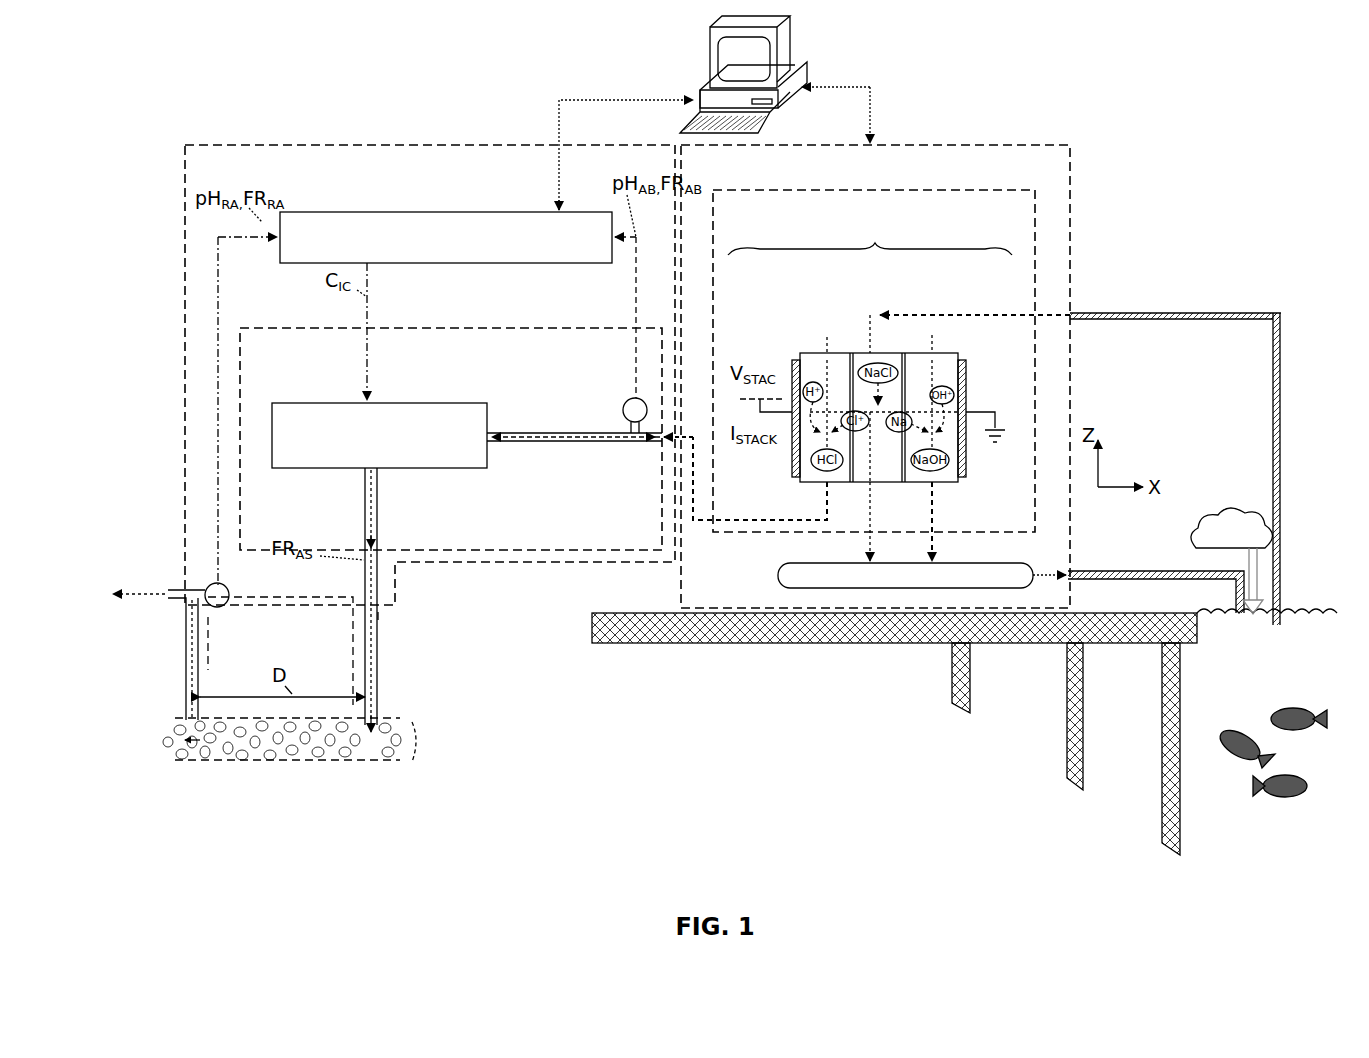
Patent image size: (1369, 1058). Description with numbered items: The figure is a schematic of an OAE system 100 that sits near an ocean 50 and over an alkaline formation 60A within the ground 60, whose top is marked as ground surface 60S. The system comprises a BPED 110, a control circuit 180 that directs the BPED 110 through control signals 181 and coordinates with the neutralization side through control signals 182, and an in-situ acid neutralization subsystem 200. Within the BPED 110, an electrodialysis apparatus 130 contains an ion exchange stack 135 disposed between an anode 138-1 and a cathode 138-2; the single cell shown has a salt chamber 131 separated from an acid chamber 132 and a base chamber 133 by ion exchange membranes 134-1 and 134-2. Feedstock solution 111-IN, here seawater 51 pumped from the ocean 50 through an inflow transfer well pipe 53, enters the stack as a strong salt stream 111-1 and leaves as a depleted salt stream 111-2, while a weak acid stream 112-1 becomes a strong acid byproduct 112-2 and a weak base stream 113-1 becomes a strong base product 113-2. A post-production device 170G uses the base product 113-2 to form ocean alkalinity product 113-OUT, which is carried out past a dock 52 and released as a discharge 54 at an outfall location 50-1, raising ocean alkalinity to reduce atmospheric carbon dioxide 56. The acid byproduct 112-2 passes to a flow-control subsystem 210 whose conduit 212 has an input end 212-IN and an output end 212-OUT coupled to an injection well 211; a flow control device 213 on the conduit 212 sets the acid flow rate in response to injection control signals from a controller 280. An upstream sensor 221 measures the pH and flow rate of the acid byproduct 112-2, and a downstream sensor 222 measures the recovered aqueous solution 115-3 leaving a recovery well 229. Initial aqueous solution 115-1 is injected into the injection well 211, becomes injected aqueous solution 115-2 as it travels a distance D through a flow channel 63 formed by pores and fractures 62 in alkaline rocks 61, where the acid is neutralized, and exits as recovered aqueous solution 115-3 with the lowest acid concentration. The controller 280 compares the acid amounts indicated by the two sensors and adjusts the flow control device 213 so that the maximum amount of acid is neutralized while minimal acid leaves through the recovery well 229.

The OAE system 100 is at (263, 53).
The control circuit 180 is at (760, 69).
The control signals 181 is at (836, 87).
The control signals 182 is at (642, 99).
The in-situ acid neutralization subsystem 200 is at (535, 197).
The controller 280 is at (555, 238).
The flow-control subsystem 210 is at (596, 379).
The flow control device 213 is at (443, 456).
The upstream sensor 221 is at (623, 412).
The conduit 212 is at (540, 447).
The input end 212-IN is at (655, 448).
The output end 212-OUT is at (382, 612).
The initial aqueous solution 115-1 is at (364, 540).
The injected aqueous solution 115-2 is at (303, 768).
The recovered aqueous solution 115-3 is at (152, 590).
The downstream sensor 222 is at (229, 592).
The recovery well 229 is at (186, 655).
The injection well 211 is at (351, 640).
The ground 60 is at (678, 730).
The ground surface 60S is at (548, 607).
The alkaline formation 60A is at (150, 718).
The alkaline rocks 61 is at (165, 742).
The pores and/or fractures 62 is at (275, 760).
The flow channel 63 is at (430, 742).
The BPED 110 is at (833, 175).
The electrodialysis apparatus 130 is at (768, 215).
The ion exchange stack 135 is at (870, 240).
The acid chamber 132 is at (800, 360).
The ion exchange membrane 134-1 is at (851, 353).
The salt chamber 131 is at (878, 353).
The ion exchange membrane 134-2 is at (903, 353).
The base chamber 133 is at (958, 360).
The strong salt stream 111-1 is at (870, 330).
The weak/depleted salt stream 111-2 is at (871, 500).
The feedstock solution 111-IN is at (1165, 311).
The weak acid stream 112-1 is at (825, 345).
The strong acid stream 112-2 is at (823, 505).
The weak base stream 113-1 is at (935, 343).
The strong base stream 113-2 is at (934, 503).
The ocean alkalinity product 113-OUT is at (1090, 595).
The anode 138-1 is at (792, 462).
The cathode 138-2 is at (955, 394).
The post-production unit 170G is at (774, 585).
The dock 52 is at (894, 721).
The inflow transfer well pipe 53 is at (1275, 313).
The ocean 50 is at (1297, 608).
The outfall location 50-1 is at (1228, 607).
The seawater 51 is at (1238, 831).
The alkaline discharge 54 is at (1243, 663).
The atmospheric CO2 56 is at (1242, 500).